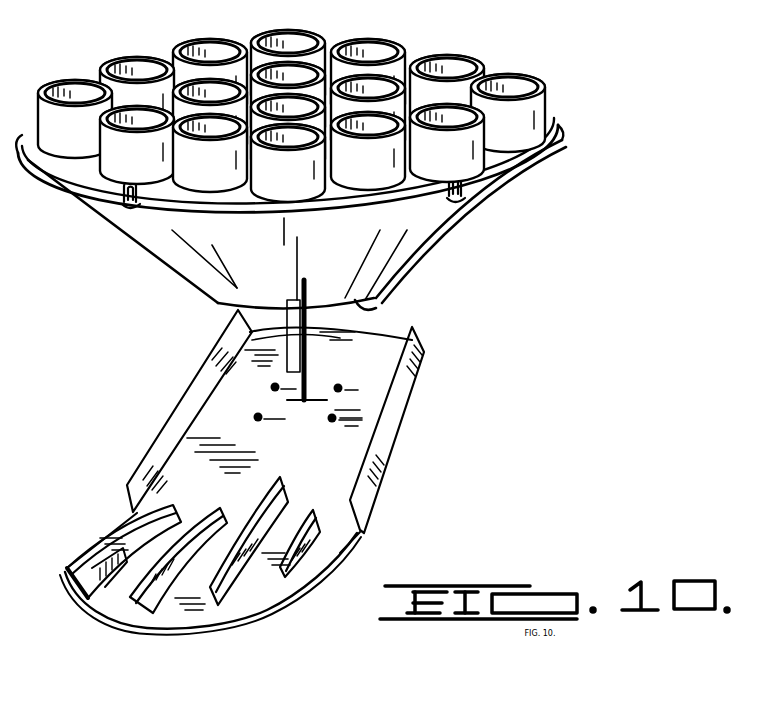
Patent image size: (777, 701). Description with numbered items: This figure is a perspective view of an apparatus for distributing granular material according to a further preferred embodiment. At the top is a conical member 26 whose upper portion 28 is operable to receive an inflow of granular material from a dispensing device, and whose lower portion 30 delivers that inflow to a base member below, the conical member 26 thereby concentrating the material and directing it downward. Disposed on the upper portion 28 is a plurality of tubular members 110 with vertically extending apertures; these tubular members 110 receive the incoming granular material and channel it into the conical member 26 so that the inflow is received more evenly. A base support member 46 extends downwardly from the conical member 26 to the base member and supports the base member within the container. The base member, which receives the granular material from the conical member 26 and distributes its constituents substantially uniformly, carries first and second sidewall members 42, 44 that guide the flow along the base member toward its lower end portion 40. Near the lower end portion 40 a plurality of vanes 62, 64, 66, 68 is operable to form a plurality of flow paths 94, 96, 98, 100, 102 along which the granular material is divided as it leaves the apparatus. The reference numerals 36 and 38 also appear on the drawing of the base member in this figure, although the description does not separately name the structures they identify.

The tubular members 110 is at (527, 70).
The upper portion 28 is at (553, 131).
The conical member 26 is at (455, 238).
The lower portion 30 is at (357, 303).
The base support member 46 is at (256, 336).
The floor of tray 38 is at (378, 360).
The first sidewall member 42 is at (165, 448).
The second sidewall member 44 is at (387, 422).
The tray 36 is at (317, 443).
The lower end portion 40 is at (157, 510).
The vane 62 is at (92, 600).
The vane 64 is at (157, 613).
The vane 66 is at (255, 590).
The vane 68 is at (295, 560).
The flow path 94 is at (110, 542).
The flow path 96 is at (118, 600).
The flow path 98 is at (218, 600).
The flow path 100 is at (258, 592).
The flow path 102 is at (328, 543).